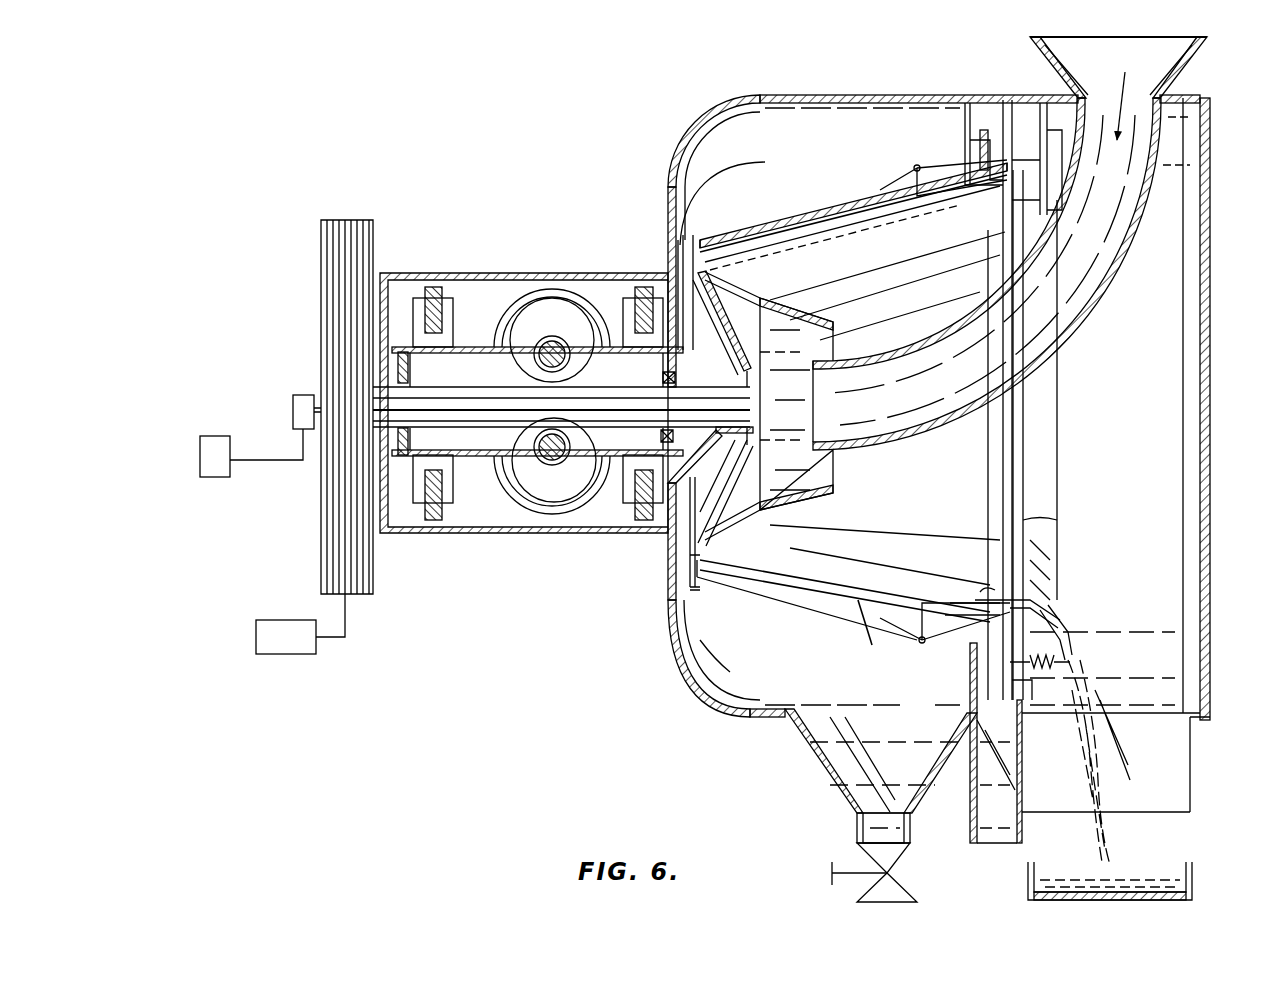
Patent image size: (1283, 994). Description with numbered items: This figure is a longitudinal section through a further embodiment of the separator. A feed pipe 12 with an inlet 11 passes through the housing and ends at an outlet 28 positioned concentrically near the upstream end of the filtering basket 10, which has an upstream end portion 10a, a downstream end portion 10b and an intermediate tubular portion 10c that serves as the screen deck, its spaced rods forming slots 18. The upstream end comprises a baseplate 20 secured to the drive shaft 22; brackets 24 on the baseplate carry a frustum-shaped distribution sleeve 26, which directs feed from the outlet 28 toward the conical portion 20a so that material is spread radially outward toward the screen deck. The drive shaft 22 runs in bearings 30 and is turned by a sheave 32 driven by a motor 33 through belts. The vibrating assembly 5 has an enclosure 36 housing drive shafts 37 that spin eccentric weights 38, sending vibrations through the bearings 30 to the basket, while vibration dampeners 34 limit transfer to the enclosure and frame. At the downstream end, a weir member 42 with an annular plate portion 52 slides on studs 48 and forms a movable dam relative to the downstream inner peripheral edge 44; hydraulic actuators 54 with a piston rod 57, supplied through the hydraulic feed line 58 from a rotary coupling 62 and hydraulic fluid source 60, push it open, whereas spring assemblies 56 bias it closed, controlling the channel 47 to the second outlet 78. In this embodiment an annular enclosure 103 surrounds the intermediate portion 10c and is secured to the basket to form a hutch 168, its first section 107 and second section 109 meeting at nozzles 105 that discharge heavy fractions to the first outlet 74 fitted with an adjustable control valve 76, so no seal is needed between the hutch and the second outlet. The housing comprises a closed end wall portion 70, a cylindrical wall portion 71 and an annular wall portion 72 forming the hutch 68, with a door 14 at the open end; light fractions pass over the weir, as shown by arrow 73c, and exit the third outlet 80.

The vibrating assembly 5 is at (561, 418).
The filtering basket 10 is at (738, 213).
The upstream end portion 10a is at (683, 262).
The downstream end portion 10b is at (990, 445).
The intermediate tubular portion 10c is at (778, 218).
The inlet 11 is at (1202, 46).
The feed pipe 12 is at (1104, 298).
The door 14 is at (1212, 665).
The slots 18 is at (797, 568).
The baseplate 20 is at (742, 283).
The conical portion 20a is at (735, 530).
The drive shaft 22 is at (437, 398).
The brackets 24 is at (770, 300).
The distribution sleeve 26 is at (814, 318).
The outlet 28 is at (826, 403).
The bearings 30 is at (666, 378).
The sheave 32 is at (375, 250).
The motor 33 is at (300, 624).
The vibration dampeners 34 is at (433, 287).
The enclosure 36 is at (515, 274).
The drive shafts 37 is at (555, 345).
The eccentric weights 38 is at (577, 355).
The weir member 42 is at (1062, 492).
The downstream inner peripheral edge 44 is at (1040, 520).
The channel 47 is at (978, 592).
The studs 48 is at (1060, 668).
The annular plate portion 52 is at (1058, 628).
The actuators 54 is at (1020, 152).
The spring assemblies 56 is at (1022, 672).
The piston rod 57 is at (988, 98).
The hydraulic feed line 58 is at (840, 226).
The hydraulic fluid source 60 is at (213, 436).
The rotary coupling 62 is at (300, 395).
The hutch 68 is at (812, 667).
The closed end wall portion 70 is at (668, 240).
The cylindrical wall portion 71 is at (832, 95).
The annular wall portion 72 is at (968, 124).
The light fraction flow arrow 73c is at (1050, 600).
The first outlet 74 is at (856, 826).
The adjustable control valve 76 is at (912, 900).
The second outlet 78 is at (970, 838).
The third outlet 80 is at (1190, 812).
The annular enclosure 103 is at (860, 173).
The nozzles 105 is at (917, 168).
The first section 107 is at (770, 610).
The second section 109 is at (952, 630).
The hutch 168 is at (862, 620).